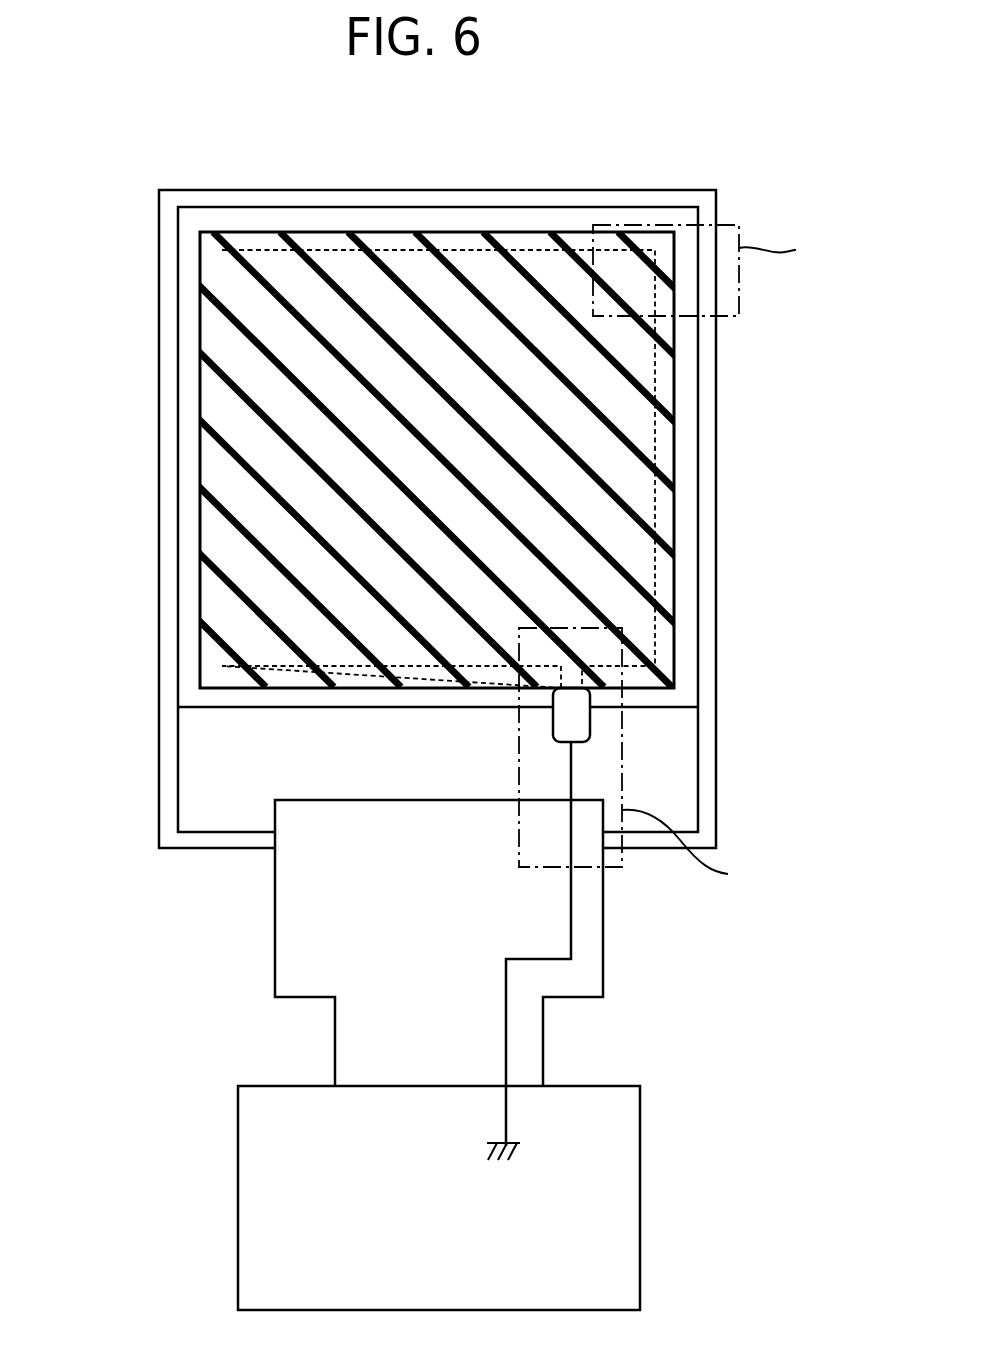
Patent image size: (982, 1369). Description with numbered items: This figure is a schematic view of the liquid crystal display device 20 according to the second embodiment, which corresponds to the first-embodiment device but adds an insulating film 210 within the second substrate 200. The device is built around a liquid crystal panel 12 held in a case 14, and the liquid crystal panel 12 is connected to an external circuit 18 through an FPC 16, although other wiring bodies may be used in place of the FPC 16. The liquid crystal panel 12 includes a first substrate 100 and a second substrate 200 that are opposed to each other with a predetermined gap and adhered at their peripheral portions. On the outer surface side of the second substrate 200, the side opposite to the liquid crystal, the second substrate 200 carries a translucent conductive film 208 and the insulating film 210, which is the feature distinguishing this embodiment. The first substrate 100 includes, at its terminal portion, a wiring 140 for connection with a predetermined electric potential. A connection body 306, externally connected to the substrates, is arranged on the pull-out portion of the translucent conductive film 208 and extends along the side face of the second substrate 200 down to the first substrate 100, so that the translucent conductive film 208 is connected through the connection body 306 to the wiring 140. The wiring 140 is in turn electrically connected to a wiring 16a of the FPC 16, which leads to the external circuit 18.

The liquid crystal display device 20 is at (172, 131).
The case 14 is at (163, 478).
The liquid crystal panel 12 is at (214, 814).
The first substrate 100 is at (213, 768).
The second substrate 200 is at (204, 700).
The translucent conductive film 208 is at (655, 367).
The insulating film 210 is at (667, 517).
The connection body 306 is at (578, 717).
The wiring 140 is at (572, 765).
The FPC 16 is at (290, 932).
The wiring of the FPC 16a is at (573, 947).
The external circuit 18 is at (238, 1173).